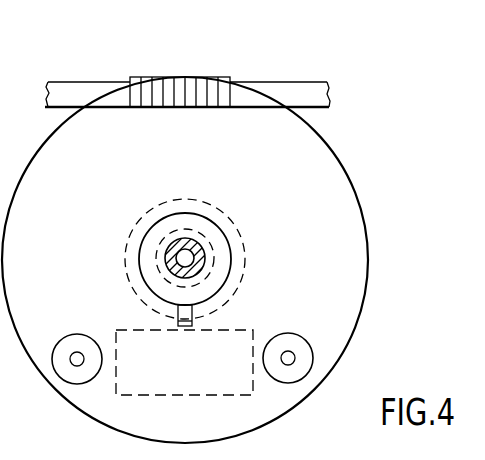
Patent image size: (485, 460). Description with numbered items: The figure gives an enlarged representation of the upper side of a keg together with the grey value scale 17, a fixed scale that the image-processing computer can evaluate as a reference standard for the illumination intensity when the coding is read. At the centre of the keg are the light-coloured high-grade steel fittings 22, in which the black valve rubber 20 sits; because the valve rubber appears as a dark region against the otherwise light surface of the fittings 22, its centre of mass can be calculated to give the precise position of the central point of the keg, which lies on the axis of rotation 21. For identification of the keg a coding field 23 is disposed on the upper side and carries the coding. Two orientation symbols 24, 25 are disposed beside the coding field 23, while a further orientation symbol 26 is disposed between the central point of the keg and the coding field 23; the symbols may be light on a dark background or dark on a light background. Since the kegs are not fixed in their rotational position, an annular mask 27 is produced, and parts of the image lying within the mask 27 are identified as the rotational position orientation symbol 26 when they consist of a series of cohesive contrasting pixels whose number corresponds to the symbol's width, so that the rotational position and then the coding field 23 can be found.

The grey value scale 17 is at (182, 82).
The black valve rubber 20 is at (184, 256).
The axis of rotation 21 is at (190, 241).
The fittings 22 is at (226, 246).
The coding field 23 is at (163, 395).
The orientation symbol 24 is at (76, 352).
The orientation symbol 25 is at (290, 351).
The rotational position orientation symbol 26 is at (186, 328).
The annular mask 27 is at (146, 215).